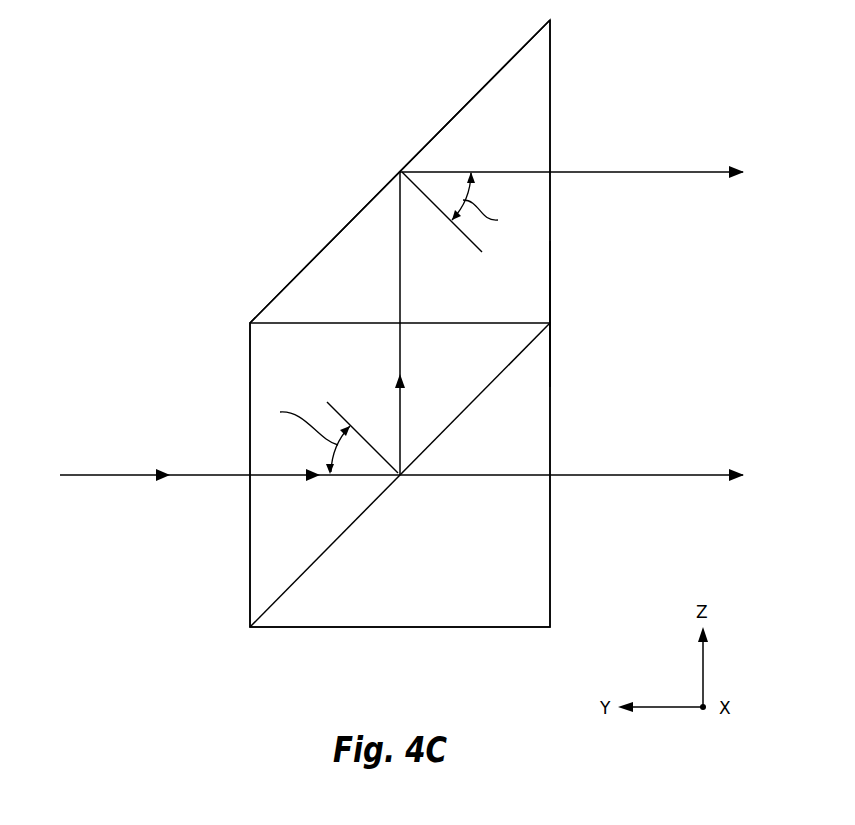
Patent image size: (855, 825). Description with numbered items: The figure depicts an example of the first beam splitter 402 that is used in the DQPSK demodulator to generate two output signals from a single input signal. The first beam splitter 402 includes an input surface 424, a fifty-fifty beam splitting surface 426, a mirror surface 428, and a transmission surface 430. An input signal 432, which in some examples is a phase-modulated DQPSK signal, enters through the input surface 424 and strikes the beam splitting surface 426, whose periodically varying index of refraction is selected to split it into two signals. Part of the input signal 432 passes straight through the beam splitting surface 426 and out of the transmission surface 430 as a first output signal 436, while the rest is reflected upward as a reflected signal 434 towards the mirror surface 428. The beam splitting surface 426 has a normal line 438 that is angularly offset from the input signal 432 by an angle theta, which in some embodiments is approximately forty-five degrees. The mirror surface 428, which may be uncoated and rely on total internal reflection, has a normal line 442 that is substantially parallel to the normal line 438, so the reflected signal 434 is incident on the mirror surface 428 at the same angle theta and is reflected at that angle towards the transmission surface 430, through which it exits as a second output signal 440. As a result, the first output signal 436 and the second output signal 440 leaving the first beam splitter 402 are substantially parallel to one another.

The first beam splitter 402 is at (168, 122).
The input surface 424 is at (249, 449).
The 50:50 beam splitting surface 426 is at (372, 508).
The mirror surface 428 is at (367, 203).
The transmission surface 430 is at (550, 241).
The input signal 432 is at (108, 473).
The reflected signal 434 is at (399, 263).
The first output signal 436 is at (611, 476).
The normal line 438 is at (337, 408).
The second output signal 440 is at (643, 170).
The normal line 442 is at (472, 246).